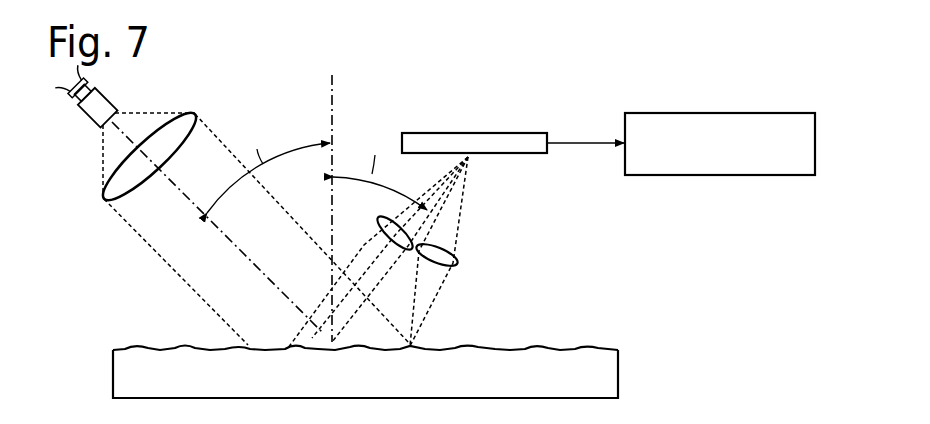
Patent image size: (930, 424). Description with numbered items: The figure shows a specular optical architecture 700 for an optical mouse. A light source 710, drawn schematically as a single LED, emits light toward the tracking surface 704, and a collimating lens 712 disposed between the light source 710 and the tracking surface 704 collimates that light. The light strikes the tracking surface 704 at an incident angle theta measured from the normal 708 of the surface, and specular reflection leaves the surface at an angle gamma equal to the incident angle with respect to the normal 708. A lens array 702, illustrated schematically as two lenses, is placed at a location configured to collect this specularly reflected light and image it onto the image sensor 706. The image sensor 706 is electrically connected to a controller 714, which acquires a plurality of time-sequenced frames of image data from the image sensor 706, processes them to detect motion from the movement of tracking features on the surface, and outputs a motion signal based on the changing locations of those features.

The specular optical architecture 700 is at (537, 62).
The lens array 702 is at (466, 262).
The tracking surface 704 is at (488, 344).
The image sensor 706 is at (492, 133).
The normal 708 is at (336, 111).
The light source 710 is at (107, 105).
The collimating lens 712 is at (190, 120).
The controller 714 is at (756, 113).